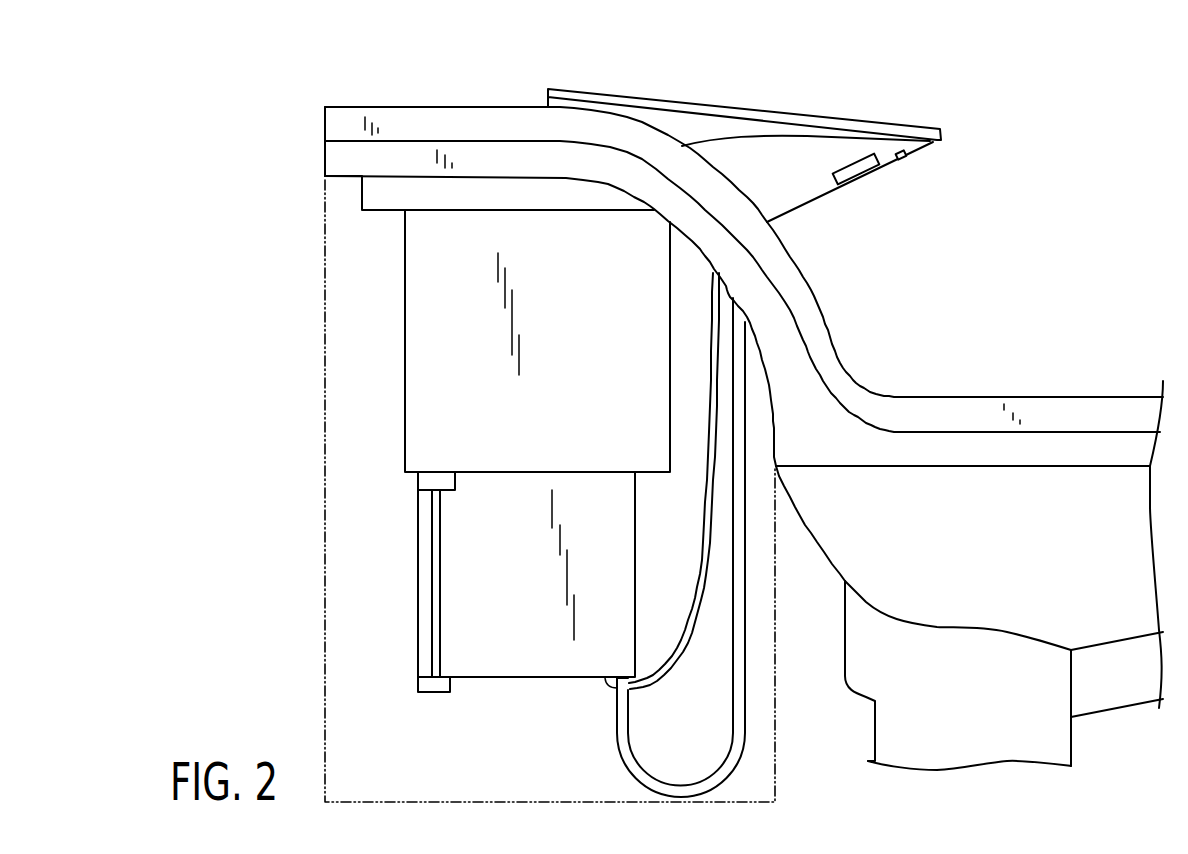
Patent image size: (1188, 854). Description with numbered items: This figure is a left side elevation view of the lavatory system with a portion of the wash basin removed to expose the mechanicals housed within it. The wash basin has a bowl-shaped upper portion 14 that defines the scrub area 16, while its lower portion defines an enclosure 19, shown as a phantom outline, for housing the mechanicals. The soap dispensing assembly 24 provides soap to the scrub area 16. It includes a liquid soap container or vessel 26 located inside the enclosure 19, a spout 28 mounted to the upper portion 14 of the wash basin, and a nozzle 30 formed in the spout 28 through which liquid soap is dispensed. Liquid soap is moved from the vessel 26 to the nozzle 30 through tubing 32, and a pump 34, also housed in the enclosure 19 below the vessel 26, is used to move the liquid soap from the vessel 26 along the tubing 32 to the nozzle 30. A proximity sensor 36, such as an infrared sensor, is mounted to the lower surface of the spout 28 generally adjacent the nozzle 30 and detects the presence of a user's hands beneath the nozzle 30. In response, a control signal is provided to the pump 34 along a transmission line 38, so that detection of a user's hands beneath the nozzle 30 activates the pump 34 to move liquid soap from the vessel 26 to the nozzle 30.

The upper portion 14 is at (343, 140).
The scrub area 16 is at (990, 397).
The enclosure 19 is at (370, 513).
The soap dispensing assembly 24 is at (559, 78).
The vessel 26 is at (421, 363).
The spout 28 is at (801, 200).
The nozzle 30 is at (903, 158).
The tubing 32 is at (617, 720).
The pump 34 is at (487, 668).
The proximity sensor 36 is at (858, 178).
The transmission line 38 is at (656, 690).